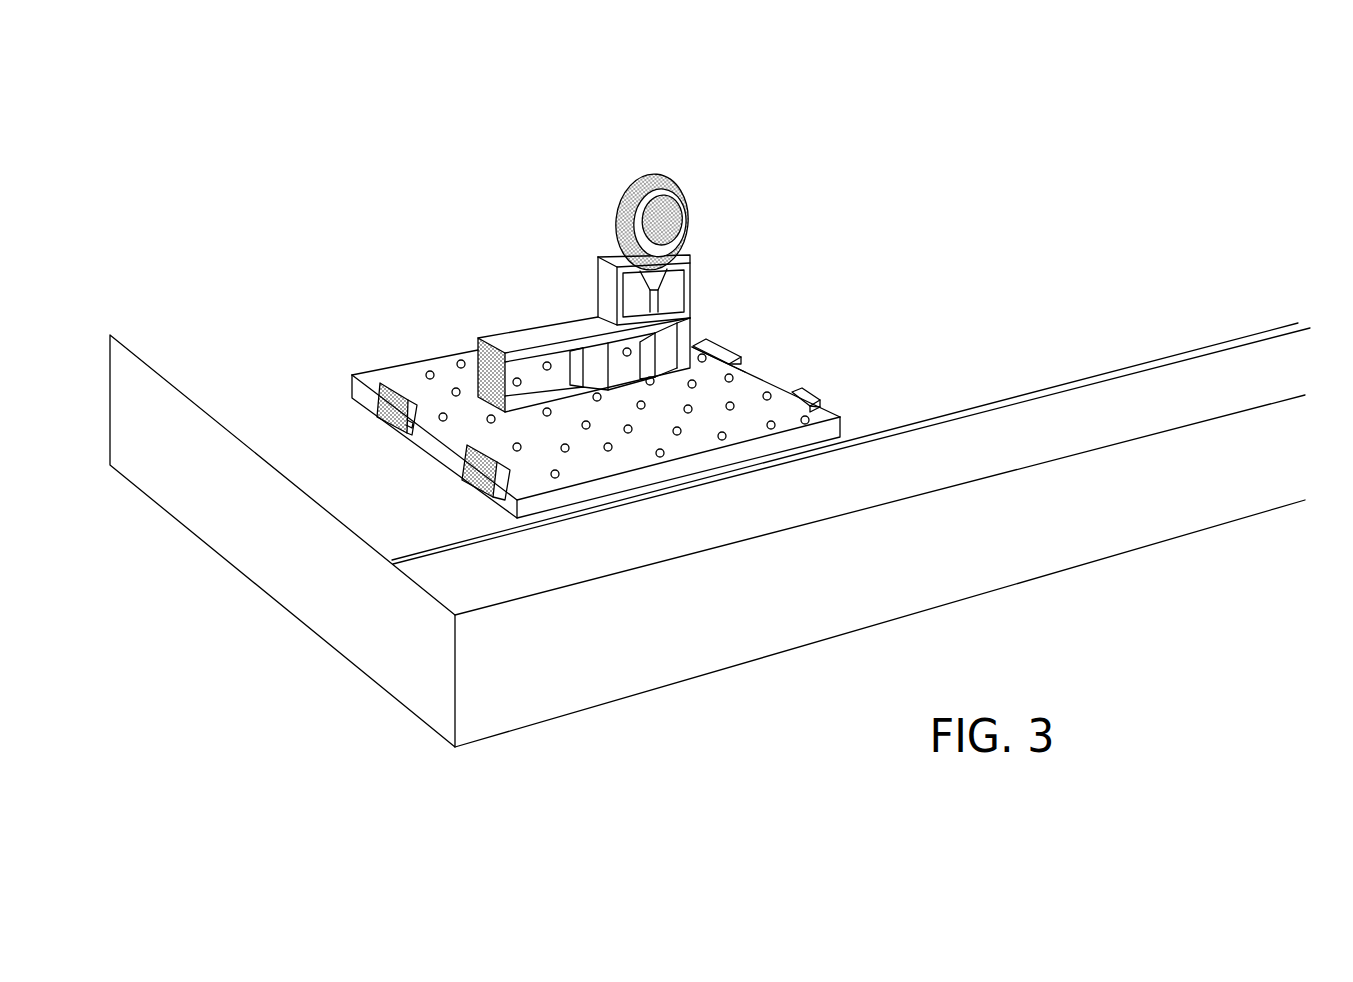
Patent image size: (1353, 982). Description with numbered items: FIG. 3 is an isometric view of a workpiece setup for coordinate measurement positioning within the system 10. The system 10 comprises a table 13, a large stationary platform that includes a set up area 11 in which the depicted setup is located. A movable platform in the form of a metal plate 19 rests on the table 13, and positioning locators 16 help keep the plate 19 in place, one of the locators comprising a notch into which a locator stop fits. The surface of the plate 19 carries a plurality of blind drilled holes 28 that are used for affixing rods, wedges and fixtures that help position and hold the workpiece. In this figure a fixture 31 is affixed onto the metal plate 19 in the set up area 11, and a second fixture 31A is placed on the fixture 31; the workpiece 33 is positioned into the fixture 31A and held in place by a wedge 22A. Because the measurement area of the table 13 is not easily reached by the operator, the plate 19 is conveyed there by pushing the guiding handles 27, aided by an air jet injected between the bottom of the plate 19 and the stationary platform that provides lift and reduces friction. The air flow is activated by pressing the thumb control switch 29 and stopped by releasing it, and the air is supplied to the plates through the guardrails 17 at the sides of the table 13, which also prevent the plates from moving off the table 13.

The system 10 is at (971, 170).
The set up area 11 is at (731, 465).
The table 13 is at (800, 494).
The positioning locators 16 is at (717, 350).
The guardrails 17 is at (1193, 351).
The second movable platform 19 is at (747, 368).
The wedge 22A is at (688, 273).
The guiding handles 27 is at (492, 497).
The blind drilled holes 28 is at (424, 374).
The thumb control switch 29 is at (407, 437).
The fixture 31 is at (543, 327).
The fixture 31A is at (597, 291).
The workpiece 33 is at (677, 185).